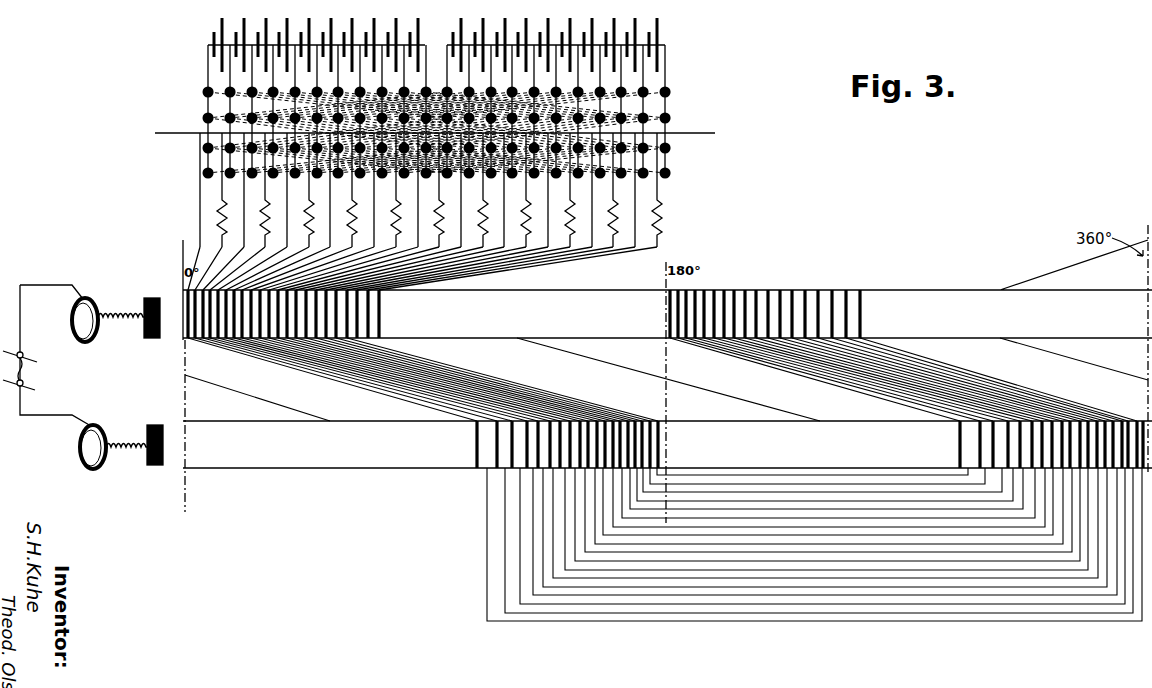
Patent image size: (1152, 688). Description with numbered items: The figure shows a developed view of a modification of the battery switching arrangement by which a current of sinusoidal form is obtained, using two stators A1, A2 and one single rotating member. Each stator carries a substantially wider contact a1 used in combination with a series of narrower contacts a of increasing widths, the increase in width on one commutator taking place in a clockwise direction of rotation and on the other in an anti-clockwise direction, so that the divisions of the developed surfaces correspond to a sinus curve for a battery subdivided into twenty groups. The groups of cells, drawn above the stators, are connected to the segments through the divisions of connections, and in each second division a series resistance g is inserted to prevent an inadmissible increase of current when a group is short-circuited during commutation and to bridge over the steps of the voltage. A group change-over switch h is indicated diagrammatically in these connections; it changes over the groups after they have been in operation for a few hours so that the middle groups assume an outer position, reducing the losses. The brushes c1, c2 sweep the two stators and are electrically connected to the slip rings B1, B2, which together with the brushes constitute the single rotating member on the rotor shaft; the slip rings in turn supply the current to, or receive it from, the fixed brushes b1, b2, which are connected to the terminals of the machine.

The narrower contact a is at (350, 341).
The wider contact a1 is at (242, 481).
The first stator A1 is at (470, 340).
The second stator A2 is at (372, 470).
The fixed brush b1 is at (84, 297).
The slip ring B1 is at (124, 314).
The brush c1 is at (152, 298).
The fixed brush b2 is at (92, 425).
The slip ring B2 is at (128, 444).
The brush c2 is at (155, 425).
The series resistance g is at (656, 220).
The group change-over switch h is at (679, 133).